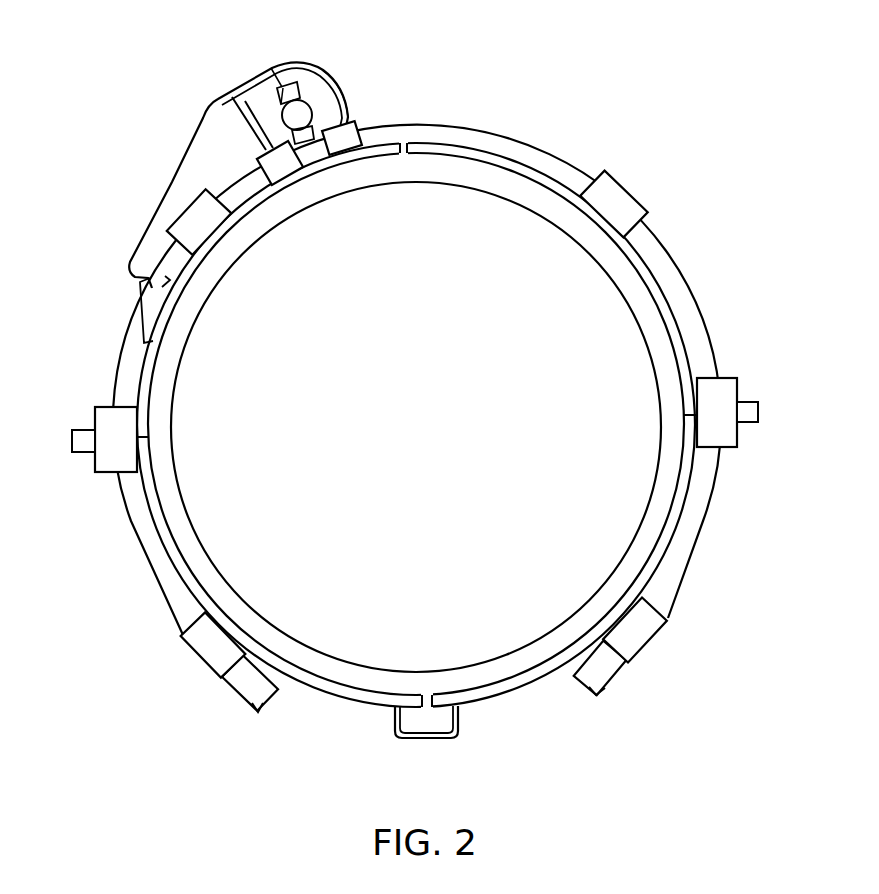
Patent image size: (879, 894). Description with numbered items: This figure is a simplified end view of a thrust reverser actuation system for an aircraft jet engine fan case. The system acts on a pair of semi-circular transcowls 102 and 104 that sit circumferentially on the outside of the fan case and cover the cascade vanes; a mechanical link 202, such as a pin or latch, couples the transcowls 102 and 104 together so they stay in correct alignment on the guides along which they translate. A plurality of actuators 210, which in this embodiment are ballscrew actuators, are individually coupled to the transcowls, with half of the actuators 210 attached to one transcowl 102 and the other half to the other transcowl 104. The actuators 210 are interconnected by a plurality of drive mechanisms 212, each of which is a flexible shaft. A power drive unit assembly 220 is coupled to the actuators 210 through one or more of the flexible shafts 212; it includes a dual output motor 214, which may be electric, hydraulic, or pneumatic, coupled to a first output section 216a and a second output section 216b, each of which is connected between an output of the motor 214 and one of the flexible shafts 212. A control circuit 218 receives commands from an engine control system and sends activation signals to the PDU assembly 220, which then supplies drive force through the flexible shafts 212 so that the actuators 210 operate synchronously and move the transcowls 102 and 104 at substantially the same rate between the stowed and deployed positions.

The transcowl 102 is at (680, 500).
The transcowl 104 is at (160, 522).
The mechanical link 202 is at (442, 740).
The actuators 210 is at (176, 208).
The drive mechanisms 212 is at (470, 130).
The dual output motor 214 is at (340, 91).
The first output section 216a is at (284, 172).
The second output section 216b is at (348, 152).
The control circuit 218 is at (132, 322).
The power drive unit assembly 220 is at (246, 68).